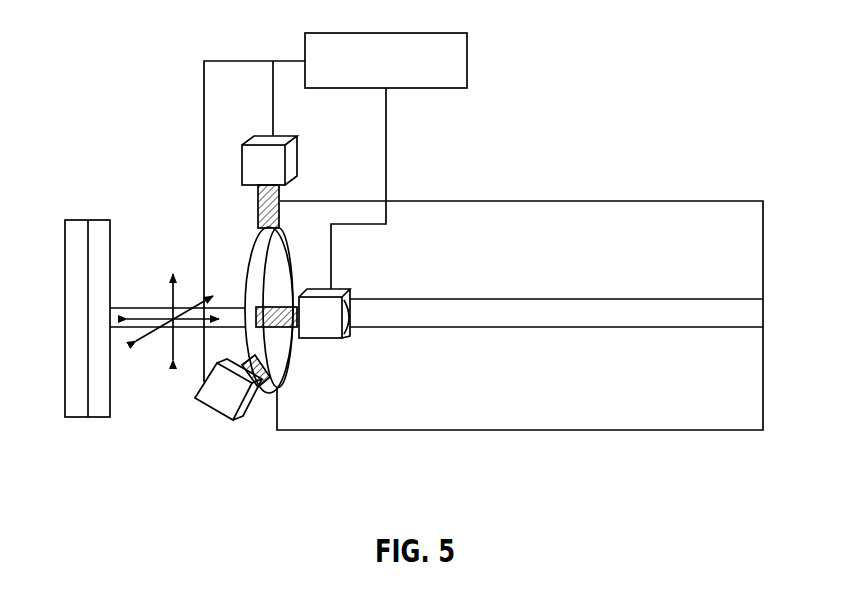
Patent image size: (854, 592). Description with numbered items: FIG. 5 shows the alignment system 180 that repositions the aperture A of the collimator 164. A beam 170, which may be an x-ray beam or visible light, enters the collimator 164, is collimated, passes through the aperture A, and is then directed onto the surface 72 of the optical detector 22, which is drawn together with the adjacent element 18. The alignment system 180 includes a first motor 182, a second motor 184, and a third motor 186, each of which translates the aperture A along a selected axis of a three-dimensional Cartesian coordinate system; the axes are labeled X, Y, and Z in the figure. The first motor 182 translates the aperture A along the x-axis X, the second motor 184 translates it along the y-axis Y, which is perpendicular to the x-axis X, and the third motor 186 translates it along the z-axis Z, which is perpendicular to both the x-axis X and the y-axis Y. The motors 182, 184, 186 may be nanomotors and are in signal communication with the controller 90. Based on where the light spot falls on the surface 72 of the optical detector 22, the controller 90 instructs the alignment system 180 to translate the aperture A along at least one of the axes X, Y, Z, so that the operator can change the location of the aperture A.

The workpiece plate 18 is at (78, 228).
The optical detector 22 is at (98, 228).
The surface of the optical detector 72 is at (113, 230).
The controller 90 is at (397, 33).
The collimator 164 is at (497, 201).
The beam 170 is at (603, 299).
The alignment system 180 is at (718, 96).
The first motor 182 is at (213, 412).
The second motor 184 is at (240, 167).
The third motor 186 is at (352, 293).
The aperture A is at (287, 237).
The x-axis X is at (147, 333).
The y-axis Y is at (165, 290).
The z-axis Z is at (165, 310).